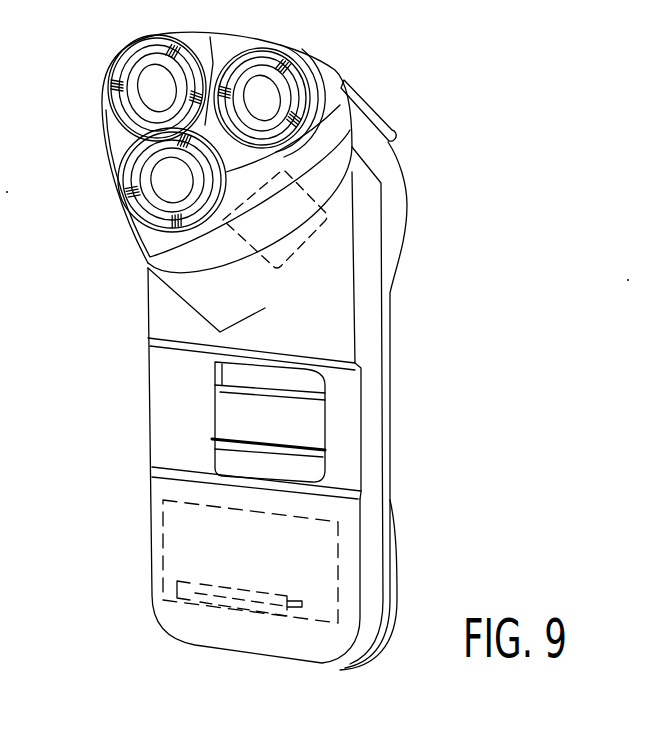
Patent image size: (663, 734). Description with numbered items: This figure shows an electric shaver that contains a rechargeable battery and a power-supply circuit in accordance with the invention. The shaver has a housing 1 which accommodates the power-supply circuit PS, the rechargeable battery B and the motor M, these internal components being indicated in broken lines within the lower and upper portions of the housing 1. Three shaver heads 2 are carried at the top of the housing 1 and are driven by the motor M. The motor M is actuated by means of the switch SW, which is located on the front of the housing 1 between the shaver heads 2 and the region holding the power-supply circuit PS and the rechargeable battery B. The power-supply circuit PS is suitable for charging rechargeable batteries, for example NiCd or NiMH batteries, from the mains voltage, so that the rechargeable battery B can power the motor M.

The housing 1 is at (337, 303).
The shaver heads 2 is at (118, 107).
The motor M is at (322, 228).
The switch SW is at (227, 410).
The power-supply circuit PS is at (338, 556).
The rechargeable battery B is at (201, 592).